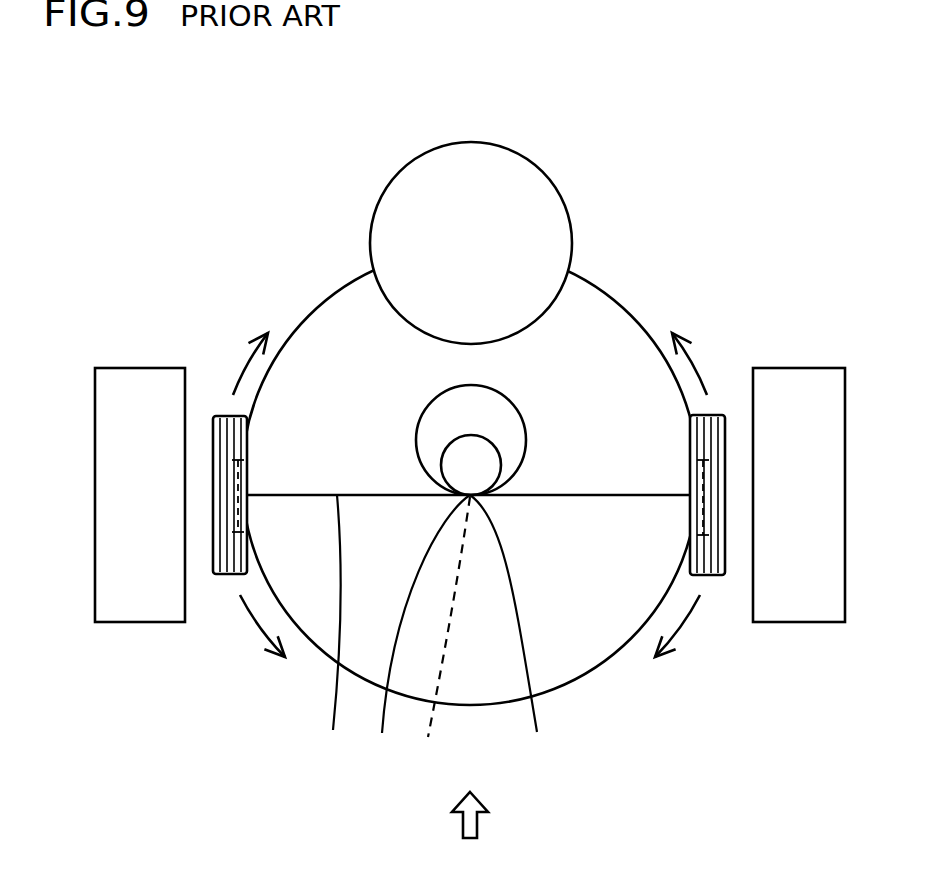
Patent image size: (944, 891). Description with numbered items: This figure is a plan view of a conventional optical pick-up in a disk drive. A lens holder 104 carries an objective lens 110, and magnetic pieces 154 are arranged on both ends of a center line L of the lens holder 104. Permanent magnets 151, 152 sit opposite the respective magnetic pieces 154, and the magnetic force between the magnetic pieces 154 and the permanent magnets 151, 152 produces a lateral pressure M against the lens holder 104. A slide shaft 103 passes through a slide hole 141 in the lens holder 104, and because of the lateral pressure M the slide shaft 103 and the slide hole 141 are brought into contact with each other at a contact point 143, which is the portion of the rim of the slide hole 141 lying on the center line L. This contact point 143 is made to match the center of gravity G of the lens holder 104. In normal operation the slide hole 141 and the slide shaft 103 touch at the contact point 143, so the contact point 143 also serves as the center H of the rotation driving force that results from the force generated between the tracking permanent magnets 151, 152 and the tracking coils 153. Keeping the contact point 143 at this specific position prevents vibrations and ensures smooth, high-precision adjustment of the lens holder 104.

The objective lens 110 is at (473, 187).
The slide hole 141 is at (440, 403).
The slide shaft 103 is at (472, 467).
The lens holder 104 is at (621, 347).
The contact point 143 is at (519, 632).
The permanent magnet 151 is at (142, 393).
The permanent magnet 152 is at (798, 393).
The tracking coils 153 is at (225, 417).
The magnetic pieces 154 is at (238, 507).
The center line L is at (334, 632).
The center of rotation driving force H is at (421, 632).
The center of gravity G is at (445, 633).
The lateral pressure M is at (486, 823).